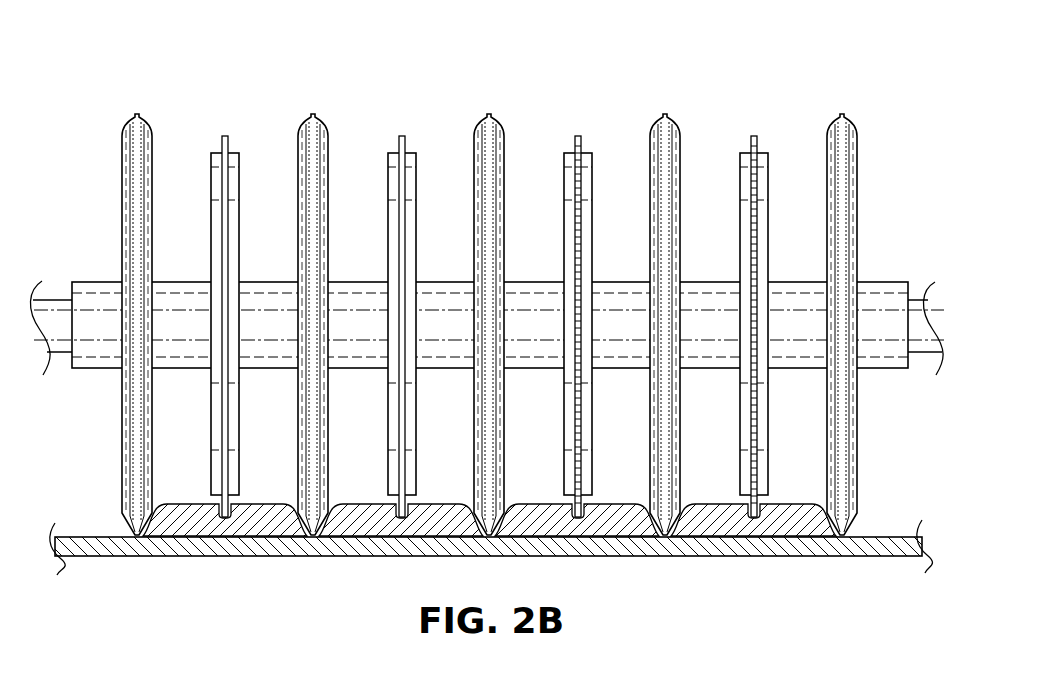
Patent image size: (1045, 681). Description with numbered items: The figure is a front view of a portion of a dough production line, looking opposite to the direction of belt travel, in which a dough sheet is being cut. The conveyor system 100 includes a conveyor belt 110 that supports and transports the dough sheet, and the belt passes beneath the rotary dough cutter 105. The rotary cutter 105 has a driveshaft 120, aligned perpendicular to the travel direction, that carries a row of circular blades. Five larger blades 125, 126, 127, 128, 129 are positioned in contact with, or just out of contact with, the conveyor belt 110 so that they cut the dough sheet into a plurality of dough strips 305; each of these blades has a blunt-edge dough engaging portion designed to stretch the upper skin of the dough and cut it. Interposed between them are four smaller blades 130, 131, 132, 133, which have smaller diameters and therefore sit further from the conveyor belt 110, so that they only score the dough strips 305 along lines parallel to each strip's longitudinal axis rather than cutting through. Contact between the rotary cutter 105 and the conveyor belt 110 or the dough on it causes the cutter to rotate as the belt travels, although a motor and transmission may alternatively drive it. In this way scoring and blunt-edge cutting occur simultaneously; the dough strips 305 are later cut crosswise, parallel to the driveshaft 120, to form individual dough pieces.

The conveyor system 100 is at (100, 565).
The rotary dough cutter 105 is at (860, 168).
The conveyor belt 110 is at (198, 557).
The driveshaft 120 is at (88, 281).
The circular blade 125 is at (137, 114).
The circular blade 126 is at (313, 114).
The circular blade 127 is at (489, 114).
The circular blade 128 is at (665, 114).
The circular blade 129 is at (842, 114).
The circular blade 130 is at (225, 135).
The circular blade 131 is at (402, 135).
The circular blade 132 is at (578, 135).
The circular blade 133 is at (754, 135).
The dough strips 305 is at (707, 520).